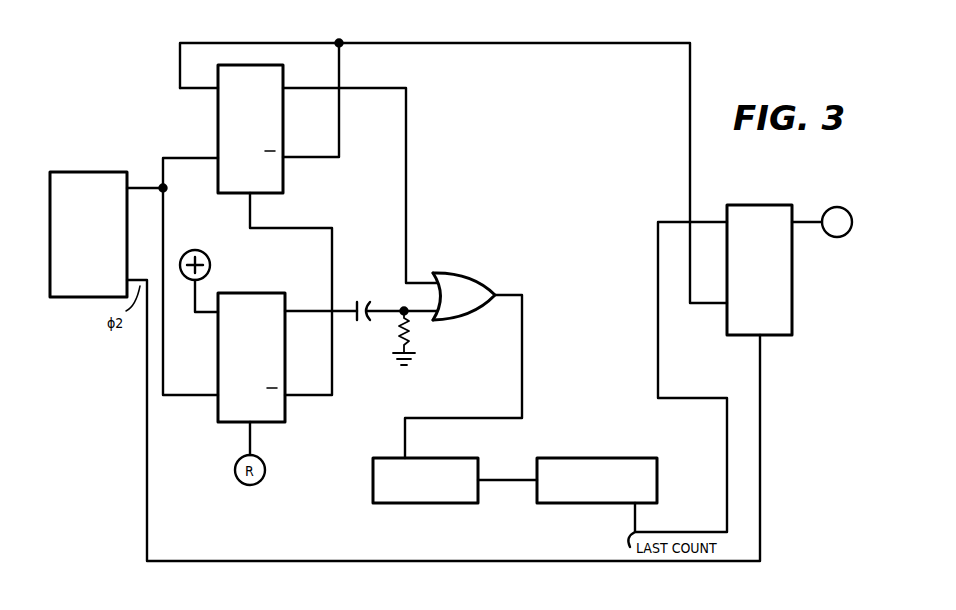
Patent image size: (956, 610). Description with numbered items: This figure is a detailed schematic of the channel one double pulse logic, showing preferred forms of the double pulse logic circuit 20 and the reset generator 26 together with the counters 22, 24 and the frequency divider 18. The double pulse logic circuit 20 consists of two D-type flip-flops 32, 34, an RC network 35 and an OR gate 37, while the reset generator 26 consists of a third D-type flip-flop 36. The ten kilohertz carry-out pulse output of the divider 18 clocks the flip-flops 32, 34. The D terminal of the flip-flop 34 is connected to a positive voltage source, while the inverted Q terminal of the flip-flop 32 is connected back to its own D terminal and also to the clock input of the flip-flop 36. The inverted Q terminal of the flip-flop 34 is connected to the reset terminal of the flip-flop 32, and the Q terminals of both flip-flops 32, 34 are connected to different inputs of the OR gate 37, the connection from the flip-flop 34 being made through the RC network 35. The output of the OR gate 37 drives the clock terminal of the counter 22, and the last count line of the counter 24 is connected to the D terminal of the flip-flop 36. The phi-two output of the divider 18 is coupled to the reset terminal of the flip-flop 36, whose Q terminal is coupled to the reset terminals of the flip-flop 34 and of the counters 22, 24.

The frequency divider 18 is at (87, 172).
The double pulse logic circuit 20 is at (436, 118).
The counter 22 is at (418, 505).
The counter 24 is at (574, 505).
The reset generator 26 is at (791, 247).
The D-type flip-flop 32 is at (218, 118).
The D-type flip-flop 34 is at (251, 293).
The RC network 35 is at (385, 328).
The D-type flip-flop 36 is at (792, 295).
The OR gate 37 is at (474, 321).